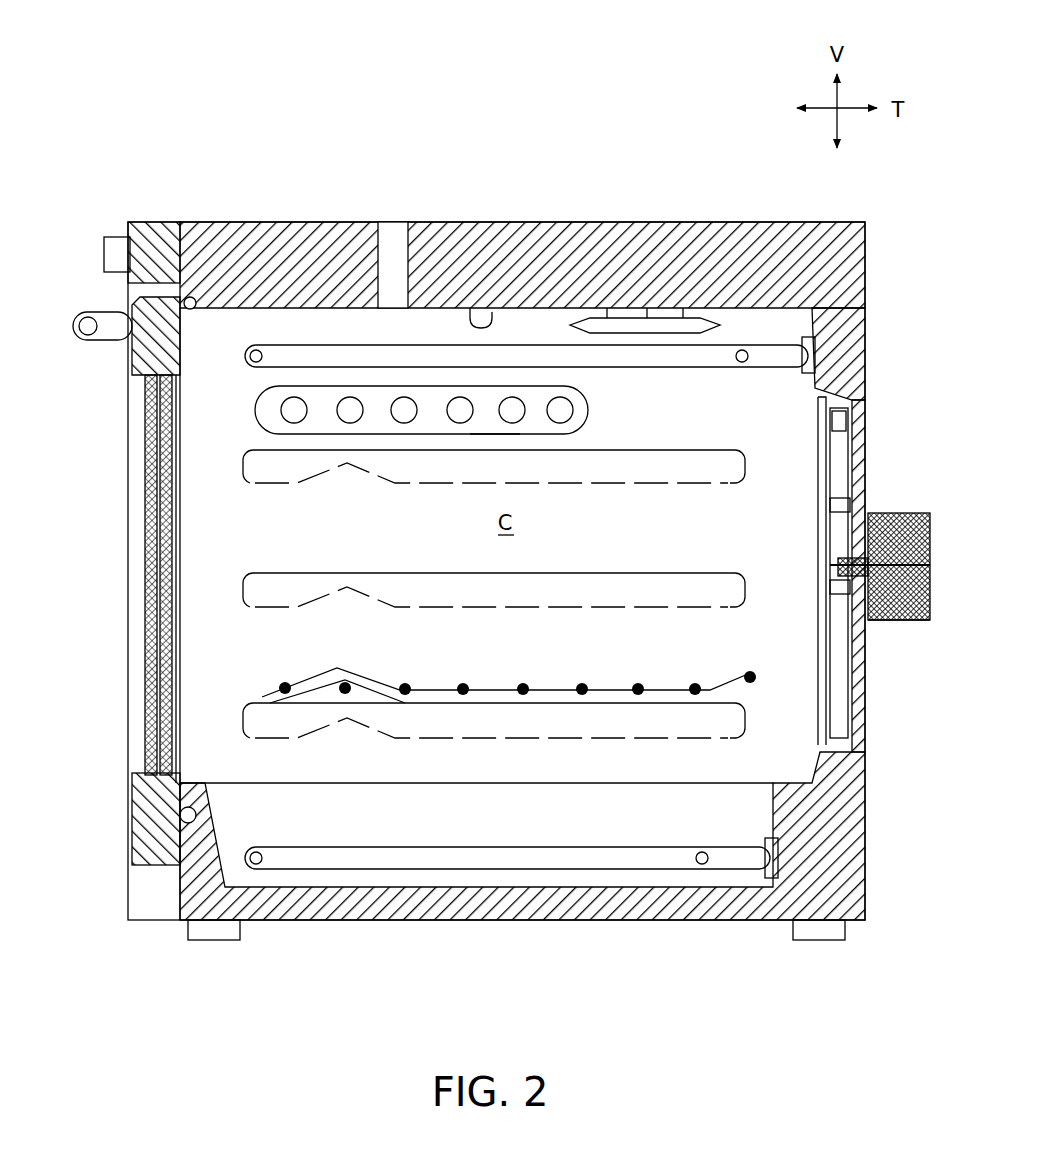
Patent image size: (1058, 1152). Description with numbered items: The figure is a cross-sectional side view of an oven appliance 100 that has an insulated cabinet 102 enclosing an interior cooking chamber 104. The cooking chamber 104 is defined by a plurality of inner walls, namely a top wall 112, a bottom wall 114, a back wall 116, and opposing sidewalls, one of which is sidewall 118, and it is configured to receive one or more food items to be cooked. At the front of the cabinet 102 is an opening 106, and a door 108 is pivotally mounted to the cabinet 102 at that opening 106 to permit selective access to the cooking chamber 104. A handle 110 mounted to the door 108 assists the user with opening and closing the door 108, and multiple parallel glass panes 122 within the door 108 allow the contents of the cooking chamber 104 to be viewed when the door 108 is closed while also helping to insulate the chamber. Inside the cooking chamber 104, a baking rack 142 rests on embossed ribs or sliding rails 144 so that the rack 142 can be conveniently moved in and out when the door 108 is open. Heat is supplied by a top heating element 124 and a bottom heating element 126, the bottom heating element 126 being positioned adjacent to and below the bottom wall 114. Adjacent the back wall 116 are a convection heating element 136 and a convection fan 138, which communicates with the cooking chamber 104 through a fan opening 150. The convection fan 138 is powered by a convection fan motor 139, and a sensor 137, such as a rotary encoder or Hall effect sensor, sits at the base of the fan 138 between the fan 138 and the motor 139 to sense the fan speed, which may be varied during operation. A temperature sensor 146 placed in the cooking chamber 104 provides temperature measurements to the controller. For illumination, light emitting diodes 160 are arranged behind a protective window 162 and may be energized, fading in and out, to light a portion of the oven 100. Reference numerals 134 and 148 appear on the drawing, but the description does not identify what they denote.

The oven appliance 100 is at (568, 92).
The insulated cabinet 102 is at (385, 222).
The cooking chamber 104 is at (867, 425).
The opening 106 is at (145, 615).
The door 108 is at (132, 365).
The handle 110 is at (86, 326).
The top wall 112 is at (476, 306).
The bottom wall 114 is at (791, 779).
The back wall 116 is at (862, 272).
The sidewall 118 is at (530, 657).
The glass panes 122 is at (178, 438).
The top heating element 124 is at (613, 354).
The bottom heating element 126 is at (441, 862).
The door latch 134 is at (116, 237).
The convection heating element 136 is at (872, 722).
The sensor 137 is at (910, 513).
The convection fan 138 is at (860, 470).
The convection fan motor 139 is at (933, 612).
The baking rack 142 is at (708, 692).
The sliding rails 144 is at (598, 463).
The temperature sensor 146 is at (648, 316).
The hinge 148 is at (192, 216).
The fan opening 150 is at (812, 477).
The light emitting diodes 160 is at (294, 425).
The protective window 162 is at (494, 436).